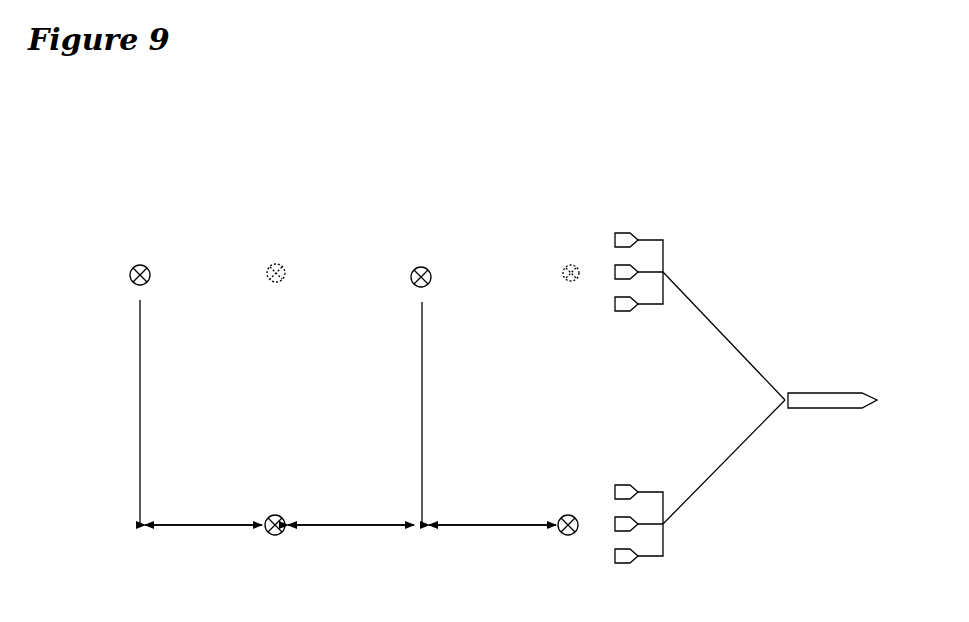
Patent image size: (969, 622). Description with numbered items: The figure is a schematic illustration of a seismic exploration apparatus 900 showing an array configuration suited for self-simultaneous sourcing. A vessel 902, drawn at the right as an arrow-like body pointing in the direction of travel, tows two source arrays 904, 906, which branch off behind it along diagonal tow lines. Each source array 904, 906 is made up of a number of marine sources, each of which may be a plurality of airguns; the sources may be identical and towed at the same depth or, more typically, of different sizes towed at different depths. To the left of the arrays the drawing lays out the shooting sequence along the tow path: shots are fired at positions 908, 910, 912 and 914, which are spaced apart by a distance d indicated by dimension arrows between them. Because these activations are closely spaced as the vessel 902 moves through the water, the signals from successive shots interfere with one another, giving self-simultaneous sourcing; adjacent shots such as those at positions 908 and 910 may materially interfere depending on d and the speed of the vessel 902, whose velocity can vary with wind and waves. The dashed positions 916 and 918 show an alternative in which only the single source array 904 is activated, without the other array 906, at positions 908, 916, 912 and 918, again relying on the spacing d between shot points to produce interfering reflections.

The seismic exploration apparatus 900 is at (510, 178).
The vessel 902 is at (830, 393).
The source array 904 is at (660, 302).
The source array 906 is at (660, 486).
The shot position 908 is at (136, 266).
The shot position 910 is at (268, 516).
The shot position 912 is at (415, 268).
The shot position 914 is at (569, 536).
The shot position 916 is at (271, 265).
The shot position 918 is at (565, 265).